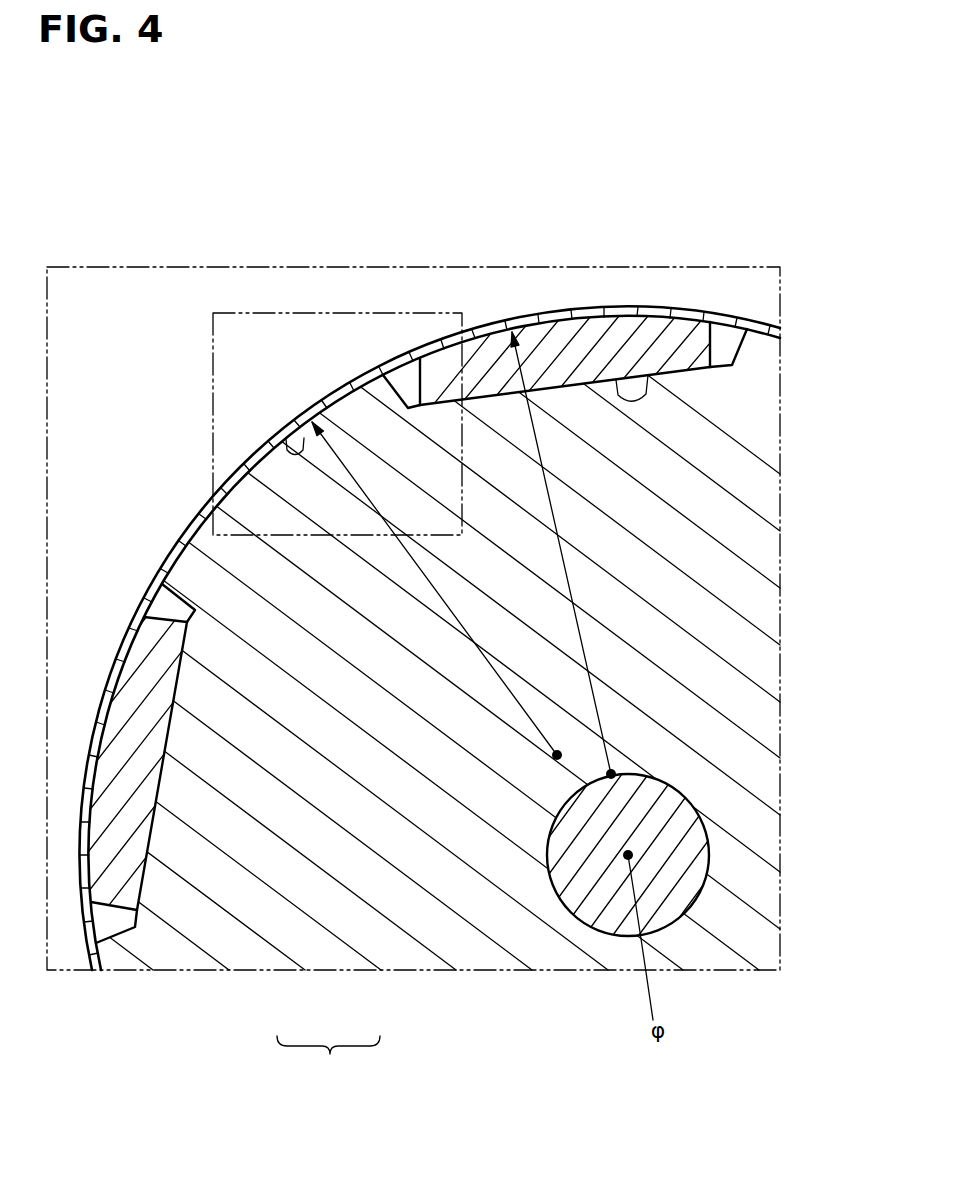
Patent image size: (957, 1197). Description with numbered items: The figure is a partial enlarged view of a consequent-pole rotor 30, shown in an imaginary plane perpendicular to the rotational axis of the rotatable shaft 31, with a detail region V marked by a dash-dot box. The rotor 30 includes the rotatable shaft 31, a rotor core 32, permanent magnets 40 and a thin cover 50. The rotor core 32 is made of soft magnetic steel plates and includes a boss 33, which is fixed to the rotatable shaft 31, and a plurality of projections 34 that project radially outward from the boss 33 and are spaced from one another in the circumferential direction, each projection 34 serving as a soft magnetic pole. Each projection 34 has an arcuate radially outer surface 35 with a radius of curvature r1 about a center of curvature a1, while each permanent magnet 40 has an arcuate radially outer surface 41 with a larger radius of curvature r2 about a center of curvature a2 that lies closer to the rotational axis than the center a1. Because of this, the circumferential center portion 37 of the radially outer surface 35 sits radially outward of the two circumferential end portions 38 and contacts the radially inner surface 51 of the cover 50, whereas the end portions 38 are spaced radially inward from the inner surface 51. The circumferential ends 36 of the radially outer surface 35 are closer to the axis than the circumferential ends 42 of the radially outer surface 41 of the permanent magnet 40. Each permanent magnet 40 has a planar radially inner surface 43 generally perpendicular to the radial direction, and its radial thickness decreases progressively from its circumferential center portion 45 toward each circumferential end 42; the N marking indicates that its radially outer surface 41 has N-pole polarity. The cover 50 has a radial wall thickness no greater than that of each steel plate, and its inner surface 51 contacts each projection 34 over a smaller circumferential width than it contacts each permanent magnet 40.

The rotor 30 is at (195, 513).
The rotatable shaft 31 is at (613, 912).
The rotor core 32 is at (328, 1058).
The boss 33 is at (420, 800).
The projection 34 is at (257, 490).
The radially outer surface of the projection 35 is at (197, 517).
The circumferential end of the radially outer surface of the projection 36 is at (383, 376).
The circumferential center portion of the radially outer surface of the projection 37 is at (238, 468).
The circumferential end portion of the radially outer surface of the projection 38 is at (357, 387).
The permanent magnet 40 is at (615, 300).
The radially outer surface of the permanent magnet 41 is at (535, 312).
The circumferential end of the radially outer surface of the permanent magnet 42 is at (417, 385).
The radially inner surface of the permanent magnet 43 is at (655, 375).
The circumferential center portion of the permanent magnet 45 is at (556, 340).
The cover 50 is at (313, 407).
The radially inner surface of the cover 51 is at (273, 440).
The radius of curvature of the radially outer surface of the projection r1 is at (434, 588).
The radius of curvature of the radially outer surface of the permanent magnet r2 is at (561, 553).
The center of curvature of the radially outer surface of the projection a1 is at (557, 755).
The center of curvature of the radially outer surface of the permanent magnet a2 is at (611, 774).
The detail region V is at (241, 312).